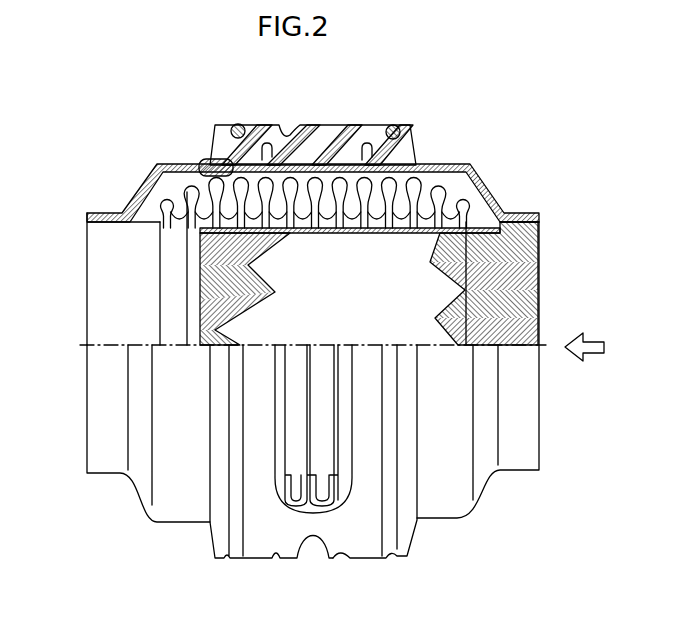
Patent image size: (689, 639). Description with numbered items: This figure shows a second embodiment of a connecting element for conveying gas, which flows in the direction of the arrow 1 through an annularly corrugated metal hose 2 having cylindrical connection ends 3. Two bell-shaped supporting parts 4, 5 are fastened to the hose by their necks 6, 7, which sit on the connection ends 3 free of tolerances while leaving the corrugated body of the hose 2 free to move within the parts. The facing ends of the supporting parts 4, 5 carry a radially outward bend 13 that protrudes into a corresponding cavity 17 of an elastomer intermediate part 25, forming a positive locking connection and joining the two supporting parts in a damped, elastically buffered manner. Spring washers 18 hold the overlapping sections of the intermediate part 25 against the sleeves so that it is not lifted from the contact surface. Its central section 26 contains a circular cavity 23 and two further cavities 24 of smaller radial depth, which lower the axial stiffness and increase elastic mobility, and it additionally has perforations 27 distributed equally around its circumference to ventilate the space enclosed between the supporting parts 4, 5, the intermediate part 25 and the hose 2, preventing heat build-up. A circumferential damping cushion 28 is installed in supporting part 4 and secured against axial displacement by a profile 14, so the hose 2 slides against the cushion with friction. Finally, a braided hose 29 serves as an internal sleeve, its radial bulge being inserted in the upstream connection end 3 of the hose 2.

The arrow 1 is at (588, 362).
The annularly corrugated metal hose 2 is at (465, 200).
The cylindrical connection ends 3 is at (103, 272).
The supporting part 4 is at (140, 193).
The supporting part 5 is at (494, 199).
The neck 6 is at (103, 436).
The neck 7 is at (517, 456).
The bend 13 is at (406, 156).
The profile 14 is at (195, 162).
The cavity 17 is at (368, 125).
The spring washers 18 is at (390, 546).
The circular cavity 23 is at (311, 124).
The further cavities 24 is at (286, 124).
The intermediate part 25 is at (365, 541).
The central section 26 is at (333, 124).
The perforations 27 is at (308, 513).
The circumferential damping cushion 28 is at (198, 160).
The braided hose 29 is at (527, 278).